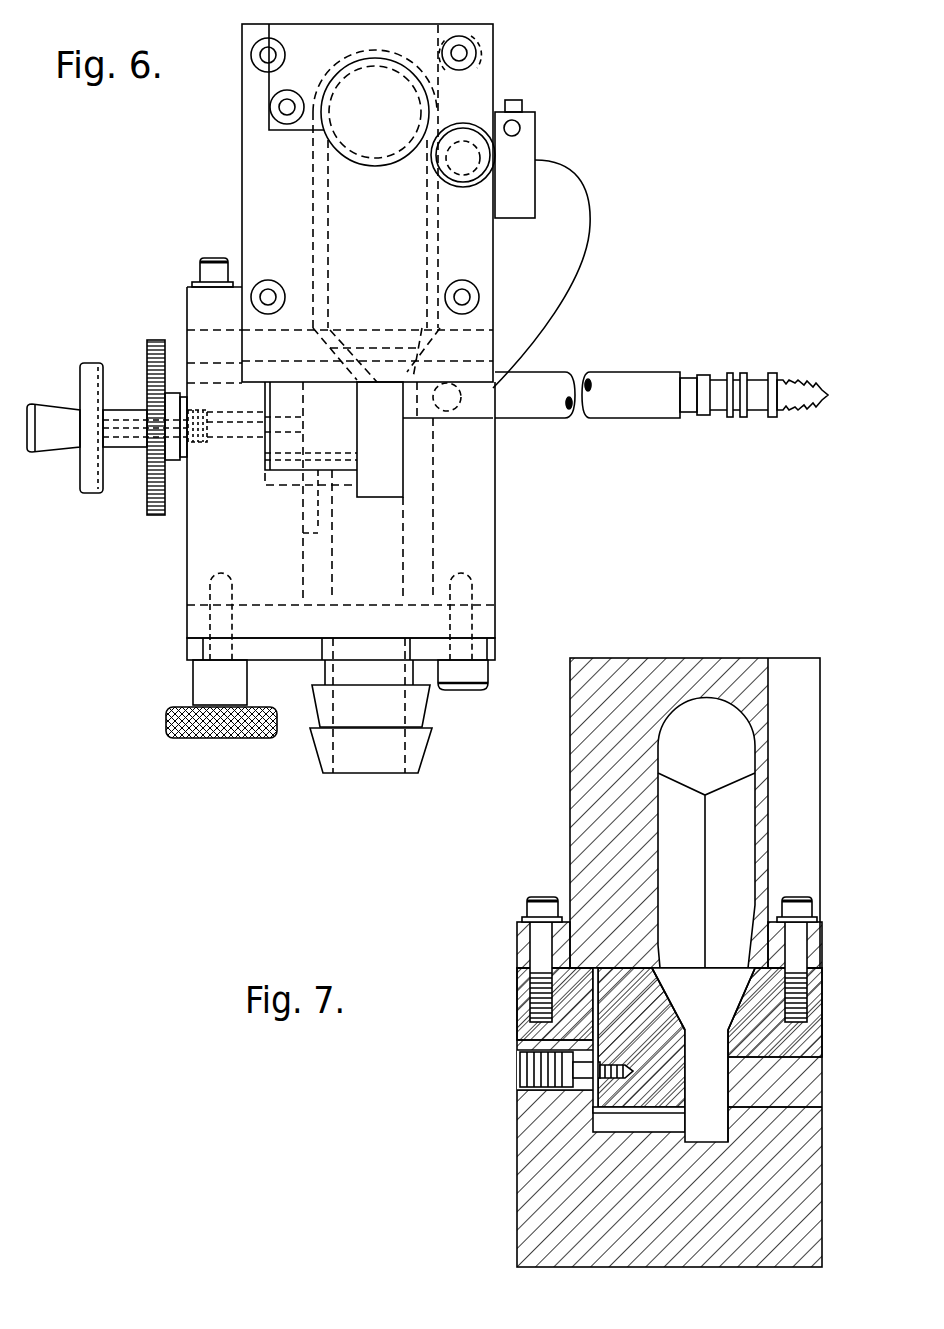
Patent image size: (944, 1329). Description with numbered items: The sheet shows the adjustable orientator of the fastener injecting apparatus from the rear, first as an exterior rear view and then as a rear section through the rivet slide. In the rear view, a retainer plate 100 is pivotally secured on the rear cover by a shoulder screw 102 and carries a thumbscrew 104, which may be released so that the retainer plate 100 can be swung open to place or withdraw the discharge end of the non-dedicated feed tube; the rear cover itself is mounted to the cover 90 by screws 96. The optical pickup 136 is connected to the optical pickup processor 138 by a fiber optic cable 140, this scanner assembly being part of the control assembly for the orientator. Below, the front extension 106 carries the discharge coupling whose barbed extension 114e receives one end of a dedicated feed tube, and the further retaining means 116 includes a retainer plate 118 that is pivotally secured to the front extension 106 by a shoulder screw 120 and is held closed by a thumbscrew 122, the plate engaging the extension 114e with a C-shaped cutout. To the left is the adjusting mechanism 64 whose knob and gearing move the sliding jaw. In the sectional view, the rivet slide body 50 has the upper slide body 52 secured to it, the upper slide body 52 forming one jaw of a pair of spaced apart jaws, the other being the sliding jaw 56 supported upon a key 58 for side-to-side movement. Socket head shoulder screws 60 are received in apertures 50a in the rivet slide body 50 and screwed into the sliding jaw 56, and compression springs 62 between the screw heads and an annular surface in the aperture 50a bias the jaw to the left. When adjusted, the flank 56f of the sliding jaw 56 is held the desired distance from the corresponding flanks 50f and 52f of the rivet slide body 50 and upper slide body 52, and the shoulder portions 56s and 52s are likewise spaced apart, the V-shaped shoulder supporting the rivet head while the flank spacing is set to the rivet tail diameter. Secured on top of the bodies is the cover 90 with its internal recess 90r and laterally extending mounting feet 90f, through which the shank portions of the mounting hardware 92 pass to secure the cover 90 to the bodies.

In FIG. 6, the retainer plate 100 is at (423, 25).
In FIG. 6, the shoulder screw 102 is at (272, 96).
In FIG. 6, the thumbscrew 104 is at (471, 122).
In FIG. 6, the optical pickup processor 138 is at (535, 135).
In FIG. 6, the fiber optic cable 140 is at (590, 213).
In FIG. 6, the screws 96 is at (270, 280).
In FIG. 6, the optical pickup 136 is at (456, 412).
In FIG. 6, the mounting hardware 92 is at (205, 258).
In FIG. 7, the mounting hardware 92 is at (537, 897).
In FIG. 6, the mounting feet 90f is at (193, 297).
In FIG. 7, the mounting feet 90f is at (518, 935).
In FIG. 6, the front extension 106 is at (197, 539).
In FIG. 6, the key 58 is at (267, 462).
In FIG. 7, the key 58 is at (603, 1122).
In FIG. 6, the socket head shoulder screws 60 is at (200, 447).
In FIG. 7, the socket head shoulder screws 60 is at (530, 1068).
In FIG. 6, the retainer plate 118 is at (188, 650).
In FIG. 6, the thumbscrew 122 is at (166, 720).
In FIG. 6, the barbed extension 114e is at (313, 750).
In FIG. 6, the shoulder screw 120 is at (460, 678).
In FIG. 6, the retaining means 116 is at (177, 748).
In FIG. 6, the adjusting mechanism 64 is at (115, 347).
In FIG. 7, the cover 90 is at (575, 778).
In FIG. 7, the recess 90r is at (732, 752).
In FIG. 7, the rivet slide body 50 is at (812, 1083).
In FIG. 7, the upper slide body 52 is at (812, 1043).
In FIG. 7, the sliding jaw 56 is at (662, 1003).
In FIG. 7, the apertures 50a is at (518, 1083).
In FIG. 7, the compression springs 62 is at (548, 1040).
In FIG. 7, the flank 56f is at (687, 1040).
In FIG. 7, the flank 52f is at (723, 1040).
In FIG. 7, the shoulder portion 56s is at (670, 968).
In FIG. 7, the shoulder portion 52s is at (732, 968).
In FIG. 7, the flank 50f is at (723, 1103).